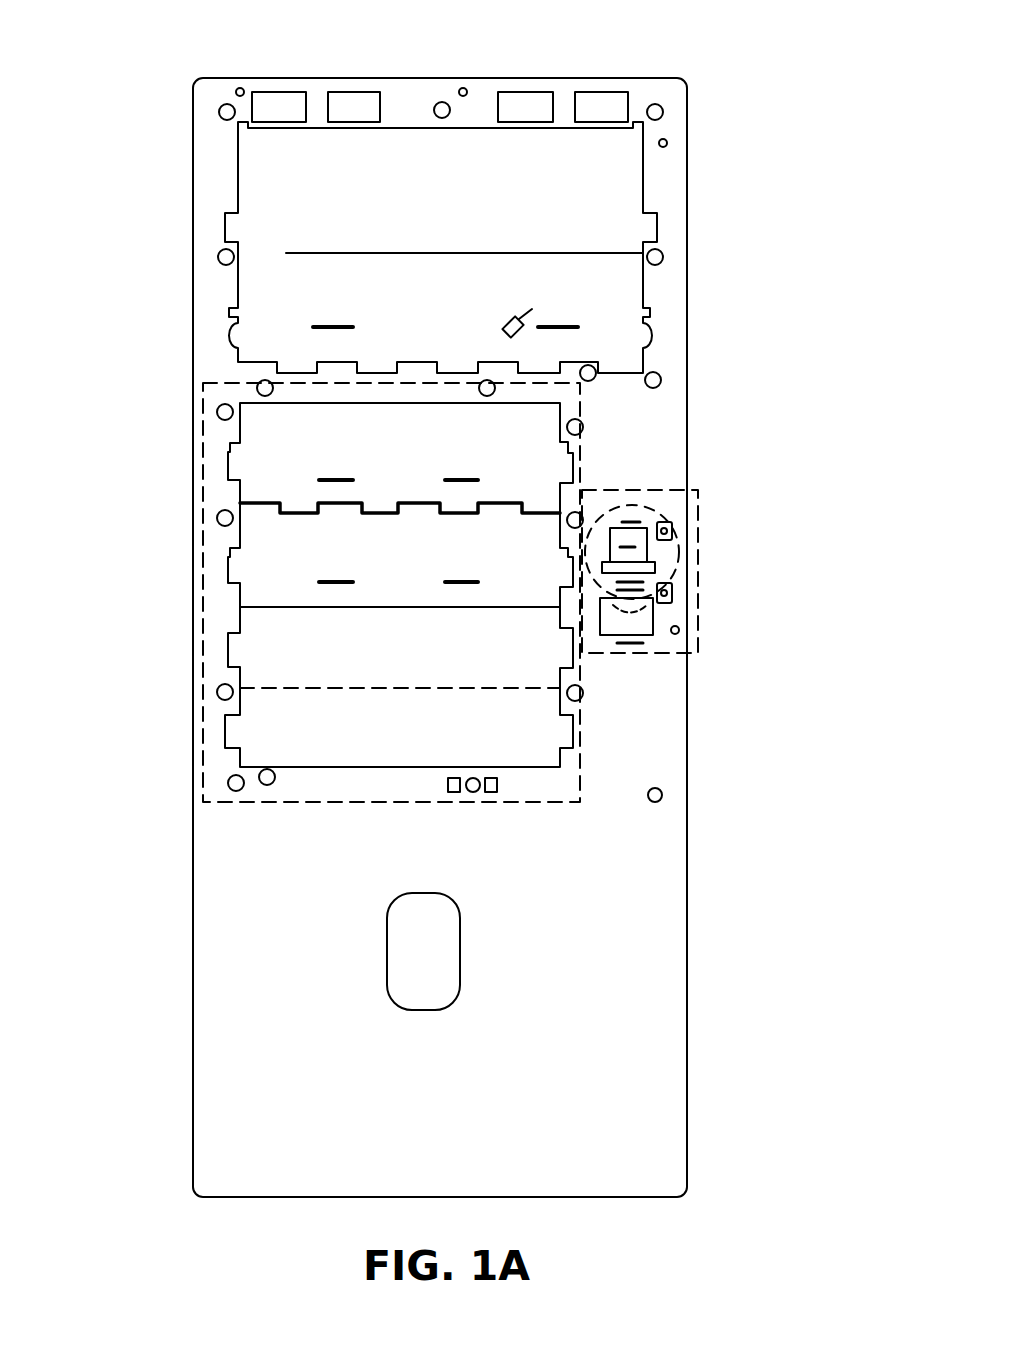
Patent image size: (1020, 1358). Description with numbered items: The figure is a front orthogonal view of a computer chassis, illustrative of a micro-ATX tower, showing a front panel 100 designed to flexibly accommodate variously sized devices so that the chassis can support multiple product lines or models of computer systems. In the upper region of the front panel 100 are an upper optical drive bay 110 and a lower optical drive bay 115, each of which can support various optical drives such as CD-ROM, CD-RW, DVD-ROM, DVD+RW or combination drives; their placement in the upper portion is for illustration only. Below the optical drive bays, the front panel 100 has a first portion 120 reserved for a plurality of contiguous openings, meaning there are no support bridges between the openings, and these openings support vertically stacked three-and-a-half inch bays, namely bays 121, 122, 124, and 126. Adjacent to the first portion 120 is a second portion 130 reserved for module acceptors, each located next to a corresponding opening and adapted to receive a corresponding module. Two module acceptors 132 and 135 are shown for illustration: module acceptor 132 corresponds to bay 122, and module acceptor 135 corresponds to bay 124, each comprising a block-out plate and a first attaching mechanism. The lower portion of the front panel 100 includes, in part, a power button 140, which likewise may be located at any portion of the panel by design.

The front panel 100 is at (468, 22).
The upper optical drive bay 110 is at (617, 190).
The lower optical drive bay 115 is at (617, 295).
The first portion 120 is at (270, 802).
The 3½ inch bay 121 is at (252, 432).
The 3½ inch bay 122 is at (252, 537).
The 3½ inch bay 124 is at (252, 625).
The 3½ inch bay 126 is at (252, 710).
The second portion 130 is at (700, 523).
The module acceptor 132 is at (677, 585).
The module acceptor 135 is at (647, 637).
The power button 140 is at (460, 940).